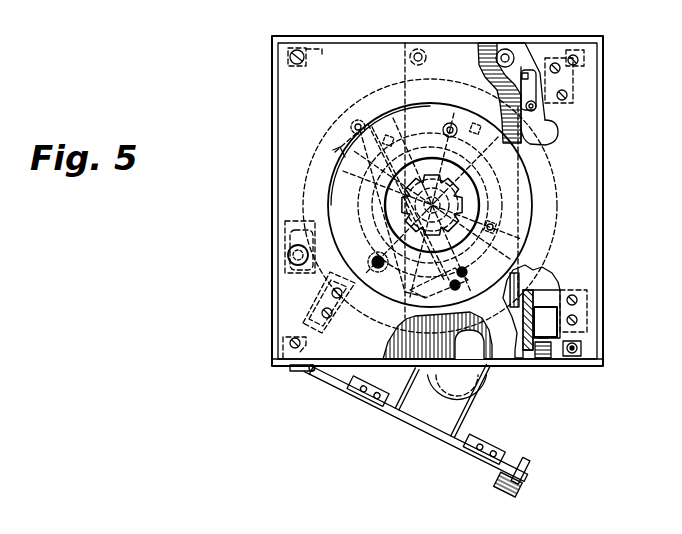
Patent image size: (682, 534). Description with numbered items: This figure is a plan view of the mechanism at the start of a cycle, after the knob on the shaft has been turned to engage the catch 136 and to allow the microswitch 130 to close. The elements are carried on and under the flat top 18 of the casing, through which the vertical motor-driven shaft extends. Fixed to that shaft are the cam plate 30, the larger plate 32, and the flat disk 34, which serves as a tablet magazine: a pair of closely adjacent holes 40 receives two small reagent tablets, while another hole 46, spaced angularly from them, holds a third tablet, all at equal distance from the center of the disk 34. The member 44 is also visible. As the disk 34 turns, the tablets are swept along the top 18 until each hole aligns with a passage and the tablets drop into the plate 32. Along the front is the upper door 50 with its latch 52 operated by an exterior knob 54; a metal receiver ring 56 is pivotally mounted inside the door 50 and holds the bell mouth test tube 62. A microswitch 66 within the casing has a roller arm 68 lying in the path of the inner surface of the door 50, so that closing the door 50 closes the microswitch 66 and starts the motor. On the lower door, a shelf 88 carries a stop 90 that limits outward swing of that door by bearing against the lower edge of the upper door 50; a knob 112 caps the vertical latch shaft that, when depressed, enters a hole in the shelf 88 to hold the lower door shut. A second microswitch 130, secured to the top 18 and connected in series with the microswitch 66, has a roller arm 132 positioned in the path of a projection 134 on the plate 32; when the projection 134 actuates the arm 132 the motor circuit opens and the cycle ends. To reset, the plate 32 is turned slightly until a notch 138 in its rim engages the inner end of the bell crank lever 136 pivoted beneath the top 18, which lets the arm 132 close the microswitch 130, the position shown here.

The top 18 is at (592, 198).
The cam plate 30 is at (381, 166).
The plate 32 is at (547, 170).
The disk 34 is at (340, 190).
The holes 40 is at (466, 274).
The member 44 is at (439, 288).
The hole 46 is at (449, 129).
The upper door 50 is at (427, 428).
The latch 52 is at (533, 467).
The knob 54 is at (503, 493).
The test tube receiver 56 is at (453, 397).
The test tube 62 is at (486, 382).
The microswitch 66 is at (545, 322).
The roller arm 68 is at (543, 360).
The shelf 88 is at (492, 233).
The stop 90 is at (332, 315).
The knob 112 is at (287, 253).
The second microswitch 130 is at (538, 68).
The roller arm 132 is at (504, 99).
The projection 134 is at (550, 124).
The bell crank lever 136 is at (528, 300).
The notch 138 is at (526, 285).